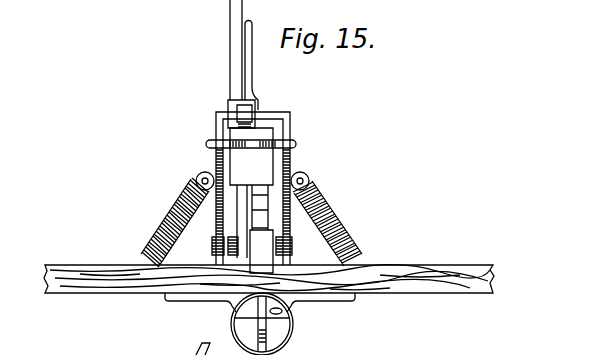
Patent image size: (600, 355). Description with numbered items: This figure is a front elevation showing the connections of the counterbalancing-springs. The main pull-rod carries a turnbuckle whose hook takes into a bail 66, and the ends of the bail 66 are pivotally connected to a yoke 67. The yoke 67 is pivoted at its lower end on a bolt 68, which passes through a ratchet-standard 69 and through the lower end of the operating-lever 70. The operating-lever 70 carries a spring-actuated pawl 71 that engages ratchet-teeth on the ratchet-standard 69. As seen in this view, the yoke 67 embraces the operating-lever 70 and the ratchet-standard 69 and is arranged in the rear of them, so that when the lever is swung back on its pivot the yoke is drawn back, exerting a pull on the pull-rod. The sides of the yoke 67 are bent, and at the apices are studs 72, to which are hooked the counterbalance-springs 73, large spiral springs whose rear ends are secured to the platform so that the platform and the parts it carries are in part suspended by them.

The bail 66 is at (210, 143).
The yoke 67 is at (286, 121).
The bolt 68 is at (293, 245).
The ratchet-standard 69 is at (261, 251).
The operating-lever 70 is at (230, 44).
The spring-actuated pawl 71 is at (251, 179).
The studs 72 is at (196, 177).
The counterbalance-springs 73 is at (164, 216).